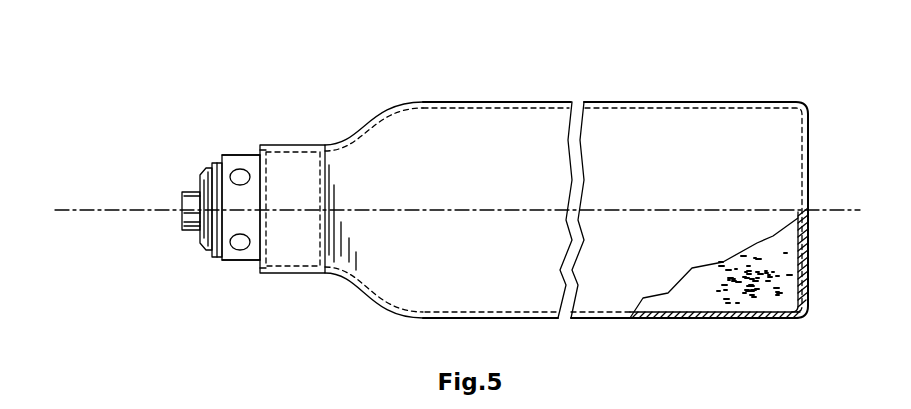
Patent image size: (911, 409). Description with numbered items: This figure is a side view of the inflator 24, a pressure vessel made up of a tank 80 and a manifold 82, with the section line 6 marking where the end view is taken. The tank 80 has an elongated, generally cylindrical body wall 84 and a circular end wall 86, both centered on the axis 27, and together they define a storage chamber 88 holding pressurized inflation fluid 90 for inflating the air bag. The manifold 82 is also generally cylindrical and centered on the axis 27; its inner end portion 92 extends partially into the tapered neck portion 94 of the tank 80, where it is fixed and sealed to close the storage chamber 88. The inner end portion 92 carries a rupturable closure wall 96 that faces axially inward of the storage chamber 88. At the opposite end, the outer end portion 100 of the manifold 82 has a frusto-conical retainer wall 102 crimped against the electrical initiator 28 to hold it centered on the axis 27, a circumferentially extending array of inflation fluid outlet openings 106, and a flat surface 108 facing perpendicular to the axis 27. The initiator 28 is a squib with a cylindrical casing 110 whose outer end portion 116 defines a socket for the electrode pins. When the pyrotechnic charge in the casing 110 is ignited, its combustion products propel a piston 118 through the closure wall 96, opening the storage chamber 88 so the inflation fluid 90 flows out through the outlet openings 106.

The section line 6- 6 is at (31, 70).
The inflator 24 is at (327, 93).
The axis 27 is at (142, 205).
The electrical initiator 28 is at (183, 197).
The tank 80 is at (496, 98).
The manifold 82 is at (231, 153).
The body wall 84 is at (700, 318).
The end wall 86 is at (800, 250).
The storage chamber 88 is at (682, 293).
The inflation fluid 90 is at (745, 278).
The inner end portion 92 is at (331, 177).
The neck portion 94 is at (308, 278).
The closure wall 96 is at (331, 232).
The outer end portion 100 is at (228, 165).
The retainer wall 102 is at (210, 246).
The inflation fluid outlet openings 106 is at (243, 167).
The flat surface 108 is at (231, 262).
The casing 110 is at (190, 220).
The outer end portion 116 is at (195, 235).
The piston 118 is at (282, 207).